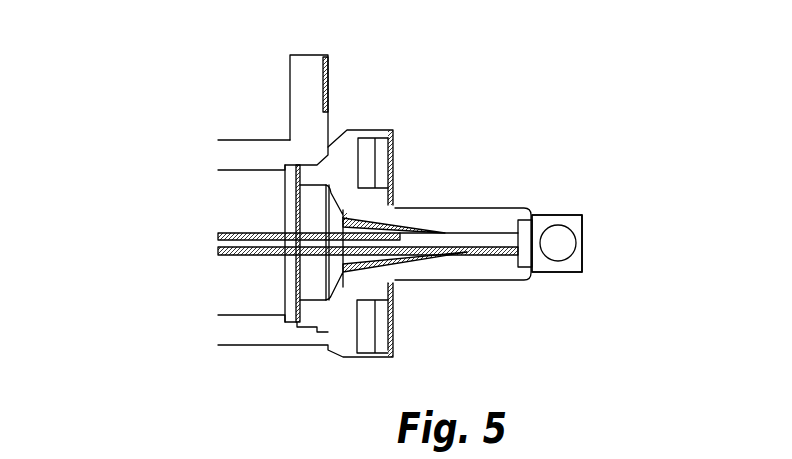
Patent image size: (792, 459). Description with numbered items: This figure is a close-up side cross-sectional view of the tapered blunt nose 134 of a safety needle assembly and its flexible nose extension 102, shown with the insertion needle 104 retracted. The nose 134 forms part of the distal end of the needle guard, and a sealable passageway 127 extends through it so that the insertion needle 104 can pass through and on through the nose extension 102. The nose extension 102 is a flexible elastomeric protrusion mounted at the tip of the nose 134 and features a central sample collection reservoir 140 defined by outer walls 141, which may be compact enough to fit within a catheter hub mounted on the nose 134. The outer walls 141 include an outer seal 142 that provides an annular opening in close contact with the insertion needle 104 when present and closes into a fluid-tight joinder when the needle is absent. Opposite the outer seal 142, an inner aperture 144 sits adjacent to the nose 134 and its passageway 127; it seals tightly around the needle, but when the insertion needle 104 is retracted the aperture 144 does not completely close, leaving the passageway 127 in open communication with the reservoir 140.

The flexible nose extension 102 is at (547, 215).
The insertion needle 104 is at (253, 240).
The passageway 127 is at (471, 232).
The nose 134 is at (437, 272).
The sample collection reservoir 140 is at (558, 248).
The outer walls 141 is at (567, 215).
The outer seal 142 is at (572, 242).
The inner aperture 144 is at (533, 243).